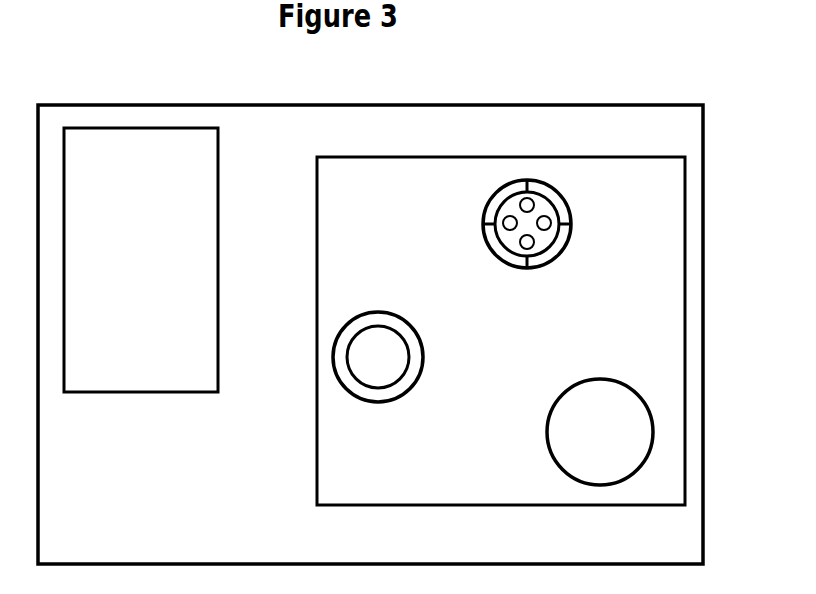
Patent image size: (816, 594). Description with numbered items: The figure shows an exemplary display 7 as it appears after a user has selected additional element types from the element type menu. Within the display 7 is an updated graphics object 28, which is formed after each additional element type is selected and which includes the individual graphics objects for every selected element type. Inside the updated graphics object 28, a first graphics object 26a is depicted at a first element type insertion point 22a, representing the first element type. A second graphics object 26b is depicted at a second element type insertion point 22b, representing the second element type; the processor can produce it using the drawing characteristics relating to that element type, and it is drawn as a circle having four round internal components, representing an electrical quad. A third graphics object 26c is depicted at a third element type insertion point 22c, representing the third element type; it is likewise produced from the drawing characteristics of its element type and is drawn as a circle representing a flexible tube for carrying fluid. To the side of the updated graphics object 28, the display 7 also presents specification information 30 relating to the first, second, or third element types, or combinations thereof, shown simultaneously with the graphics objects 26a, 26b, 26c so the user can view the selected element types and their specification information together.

The display 7 is at (704, 138).
The specification information 30 is at (219, 183).
The updated graphics object 28 is at (317, 450).
The first element type insertion point 22a is at (375, 353).
The first graphics object 26a is at (422, 353).
The second element type insertion point 22b is at (528, 222).
The second graphics object 26b is at (486, 206).
The third element type insertion point 22c is at (595, 433).
The third graphics object 26c is at (600, 380).